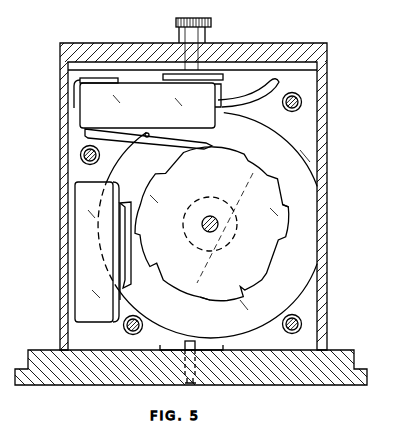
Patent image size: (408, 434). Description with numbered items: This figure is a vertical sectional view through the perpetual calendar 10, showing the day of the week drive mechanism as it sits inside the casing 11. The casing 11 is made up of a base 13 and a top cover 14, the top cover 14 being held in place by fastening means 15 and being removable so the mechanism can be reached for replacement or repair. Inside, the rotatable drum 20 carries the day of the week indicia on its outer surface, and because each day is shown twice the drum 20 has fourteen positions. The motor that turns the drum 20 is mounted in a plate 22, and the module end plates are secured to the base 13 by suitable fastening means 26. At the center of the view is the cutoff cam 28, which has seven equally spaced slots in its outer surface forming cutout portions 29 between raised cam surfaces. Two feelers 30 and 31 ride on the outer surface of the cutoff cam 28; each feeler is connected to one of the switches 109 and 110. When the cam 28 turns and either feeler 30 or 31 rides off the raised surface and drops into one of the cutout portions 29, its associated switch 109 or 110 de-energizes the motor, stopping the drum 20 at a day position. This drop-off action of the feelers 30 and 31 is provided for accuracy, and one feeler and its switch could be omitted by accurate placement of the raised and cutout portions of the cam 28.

The perpetual calendar 10 is at (333, 59).
The casing 11 is at (58, 140).
The base 13 is at (318, 378).
The top cover 14 is at (254, 43).
The fastening means 15 is at (176, 26).
The rotatable drum 20 is at (300, 297).
The plate 22 is at (306, 132).
The fastening means 26 is at (224, 383).
The cutoff cam 28 is at (250, 265).
The cutout portions 29 is at (282, 213).
The feeler 30 is at (144, 148).
The feeler 31 is at (130, 266).
The switch 109 is at (142, 109).
The switch 110 is at (96, 282).